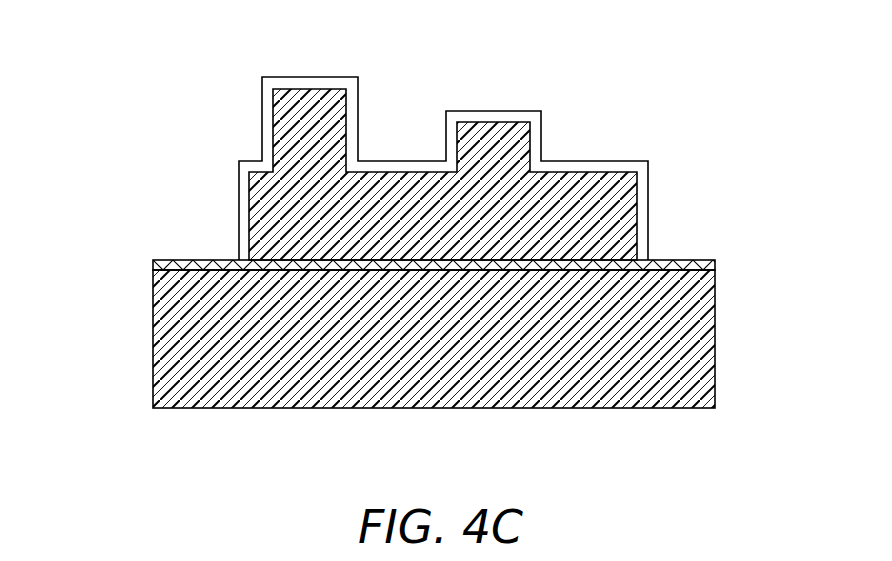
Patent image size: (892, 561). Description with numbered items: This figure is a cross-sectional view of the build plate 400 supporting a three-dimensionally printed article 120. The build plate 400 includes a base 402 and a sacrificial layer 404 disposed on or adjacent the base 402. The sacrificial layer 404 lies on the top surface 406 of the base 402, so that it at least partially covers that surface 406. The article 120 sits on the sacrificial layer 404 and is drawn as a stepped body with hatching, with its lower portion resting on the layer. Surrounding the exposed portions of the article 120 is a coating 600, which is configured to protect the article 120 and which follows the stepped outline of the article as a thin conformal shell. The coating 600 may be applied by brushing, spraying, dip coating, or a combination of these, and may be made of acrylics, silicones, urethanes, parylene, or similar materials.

The build plate 400 is at (150, 192).
The base 402 is at (703, 347).
The sacrificial layer 404 is at (714, 261).
The top surface 406 is at (575, 272).
The article 120 is at (399, 192).
The coating 600 is at (322, 77).